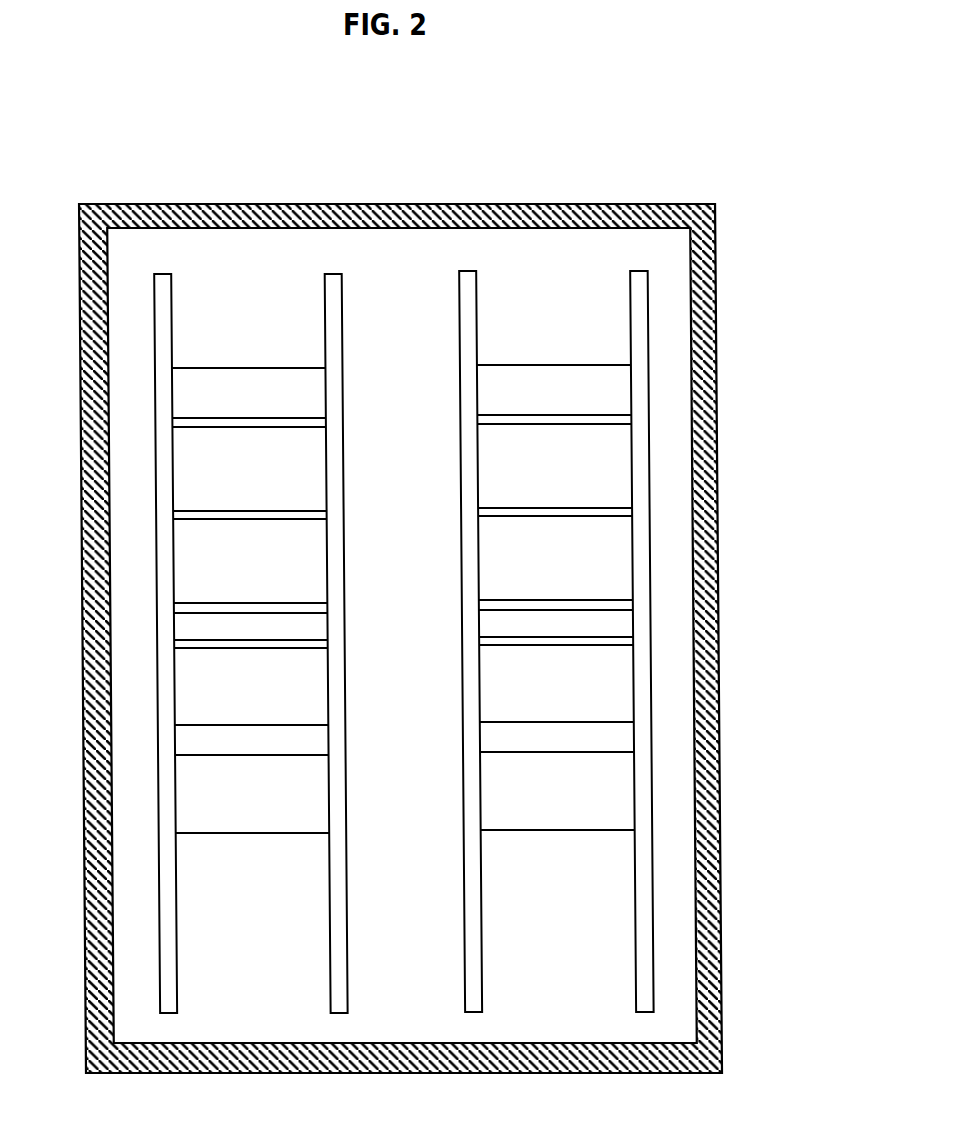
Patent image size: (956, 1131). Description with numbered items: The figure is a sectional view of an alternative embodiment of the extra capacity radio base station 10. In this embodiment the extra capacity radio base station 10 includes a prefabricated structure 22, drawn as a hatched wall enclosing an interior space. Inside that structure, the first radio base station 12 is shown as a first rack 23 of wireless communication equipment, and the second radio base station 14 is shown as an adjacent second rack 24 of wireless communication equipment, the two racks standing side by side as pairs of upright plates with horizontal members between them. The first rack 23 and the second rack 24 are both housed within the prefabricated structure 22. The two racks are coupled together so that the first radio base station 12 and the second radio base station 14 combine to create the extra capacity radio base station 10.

The extra capacity radio base station 10 is at (216, 152).
The prefabricated structure 22 is at (400, 638).
The first radio base station 12 is at (165, 643).
The first rack 23 is at (336, 643).
The second rack 24 is at (470, 641).
The second radio base station 14 is at (641, 641).